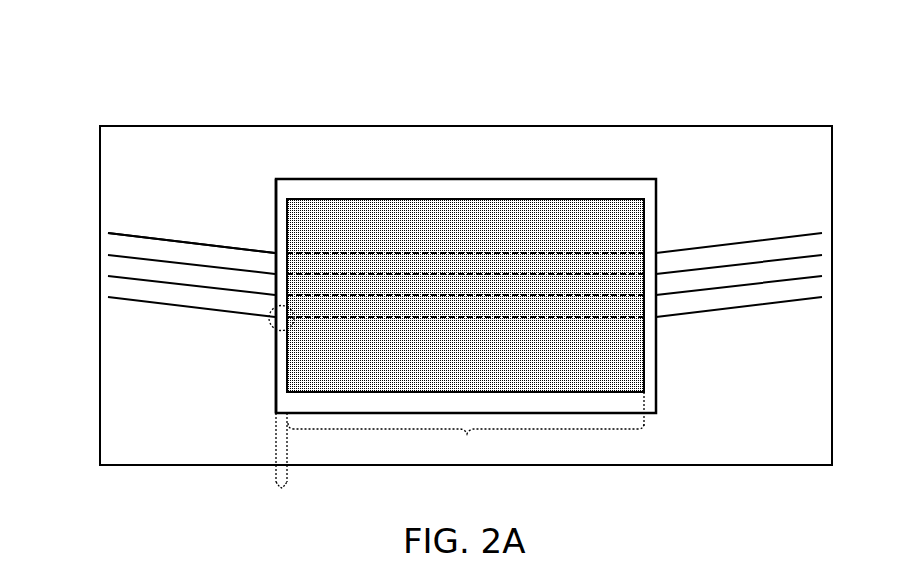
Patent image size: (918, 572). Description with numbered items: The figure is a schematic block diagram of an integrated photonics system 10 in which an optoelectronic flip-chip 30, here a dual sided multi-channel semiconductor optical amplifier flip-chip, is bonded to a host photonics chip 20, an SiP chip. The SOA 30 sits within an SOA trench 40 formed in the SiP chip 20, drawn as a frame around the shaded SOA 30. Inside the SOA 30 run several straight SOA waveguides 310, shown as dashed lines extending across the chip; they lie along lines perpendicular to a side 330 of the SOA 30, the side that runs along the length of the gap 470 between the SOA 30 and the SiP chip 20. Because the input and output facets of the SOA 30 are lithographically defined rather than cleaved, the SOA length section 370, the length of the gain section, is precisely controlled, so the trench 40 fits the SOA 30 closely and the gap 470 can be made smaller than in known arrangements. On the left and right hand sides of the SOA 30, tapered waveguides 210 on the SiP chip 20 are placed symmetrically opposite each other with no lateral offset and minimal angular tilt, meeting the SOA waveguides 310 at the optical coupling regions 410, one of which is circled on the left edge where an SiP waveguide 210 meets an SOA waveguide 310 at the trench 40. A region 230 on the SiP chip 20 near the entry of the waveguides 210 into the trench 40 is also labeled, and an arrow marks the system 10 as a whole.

The integrated photonics system 10 is at (97, 52).
The host photonics chip 20 is at (240, 126).
The optoelectronic flip-chip 30 is at (418, 199).
The SOA trench 40 is at (592, 402).
The tapered waveguides 210 is at (113, 255).
The fiber attach region 230 is at (273, 235).
The SOA waveguides 310 is at (570, 275).
The side of the SOA 330 is at (276, 210).
The SOA length section 370 is at (466, 427).
The optical coupling regions 410 is at (268, 330).
The gap 470 is at (283, 465).